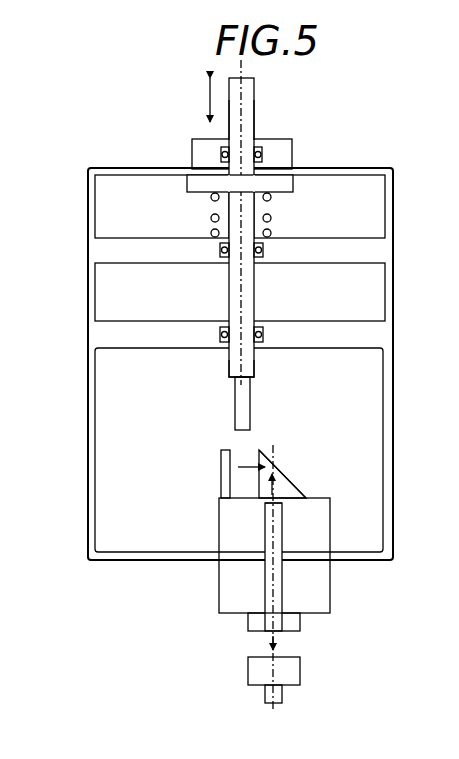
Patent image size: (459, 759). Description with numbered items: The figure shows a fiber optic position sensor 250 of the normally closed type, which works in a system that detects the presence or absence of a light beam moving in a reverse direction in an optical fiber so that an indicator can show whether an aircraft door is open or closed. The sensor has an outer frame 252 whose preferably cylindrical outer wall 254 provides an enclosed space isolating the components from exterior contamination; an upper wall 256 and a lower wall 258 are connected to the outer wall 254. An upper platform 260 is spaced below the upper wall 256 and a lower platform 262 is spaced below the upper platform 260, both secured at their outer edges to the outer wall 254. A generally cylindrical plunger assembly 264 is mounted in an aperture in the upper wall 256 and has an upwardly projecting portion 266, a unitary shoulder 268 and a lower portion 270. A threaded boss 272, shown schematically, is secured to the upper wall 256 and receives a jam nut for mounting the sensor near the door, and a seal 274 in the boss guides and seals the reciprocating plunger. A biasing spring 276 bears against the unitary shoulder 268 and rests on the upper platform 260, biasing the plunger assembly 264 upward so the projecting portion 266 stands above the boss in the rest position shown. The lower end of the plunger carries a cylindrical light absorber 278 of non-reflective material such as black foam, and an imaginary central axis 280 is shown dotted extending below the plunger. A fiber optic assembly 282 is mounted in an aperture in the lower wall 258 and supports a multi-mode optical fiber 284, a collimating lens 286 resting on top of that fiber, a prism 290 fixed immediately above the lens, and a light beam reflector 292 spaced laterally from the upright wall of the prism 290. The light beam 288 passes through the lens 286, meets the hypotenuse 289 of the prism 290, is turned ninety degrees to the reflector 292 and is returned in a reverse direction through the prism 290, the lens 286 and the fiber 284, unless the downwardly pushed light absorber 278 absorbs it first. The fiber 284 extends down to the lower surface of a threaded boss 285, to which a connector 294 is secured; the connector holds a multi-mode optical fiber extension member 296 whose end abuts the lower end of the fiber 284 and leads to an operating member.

The fiber optic position sensor 250 is at (367, 166).
The outer frame 252 is at (396, 216).
The outer wall 254 is at (88, 330).
The upper wall 256 is at (120, 167).
The lower wall 258 is at (157, 560).
The upper platform 260 is at (138, 236).
The lower platform 262 is at (118, 350).
The plunger assembly 264 is at (256, 92).
The upwardly projecting portion 266 is at (256, 122).
The unitary shoulder 268 is at (294, 190).
The lower portion 270 is at (229, 364).
The threaded boss 272 is at (196, 138).
The seal 274 is at (220, 154).
The biasing spring 276 is at (211, 219).
The light absorber 278 is at (251, 408).
The central axis 280 is at (248, 300).
The fiber optic assembly 282 is at (331, 586).
The multi-mode optical fiber 284 is at (285, 583).
The threaded boss 285 is at (255, 633).
The collimating lens 286 is at (283, 503).
The light beam 288 is at (270, 557).
The hypotenuse 289 is at (292, 484).
The prism 290 is at (300, 495).
The light beam reflector 292 is at (221, 462).
The connector 294 is at (300, 677).
The multi-mode optical fiber extension member 296 is at (284, 696).